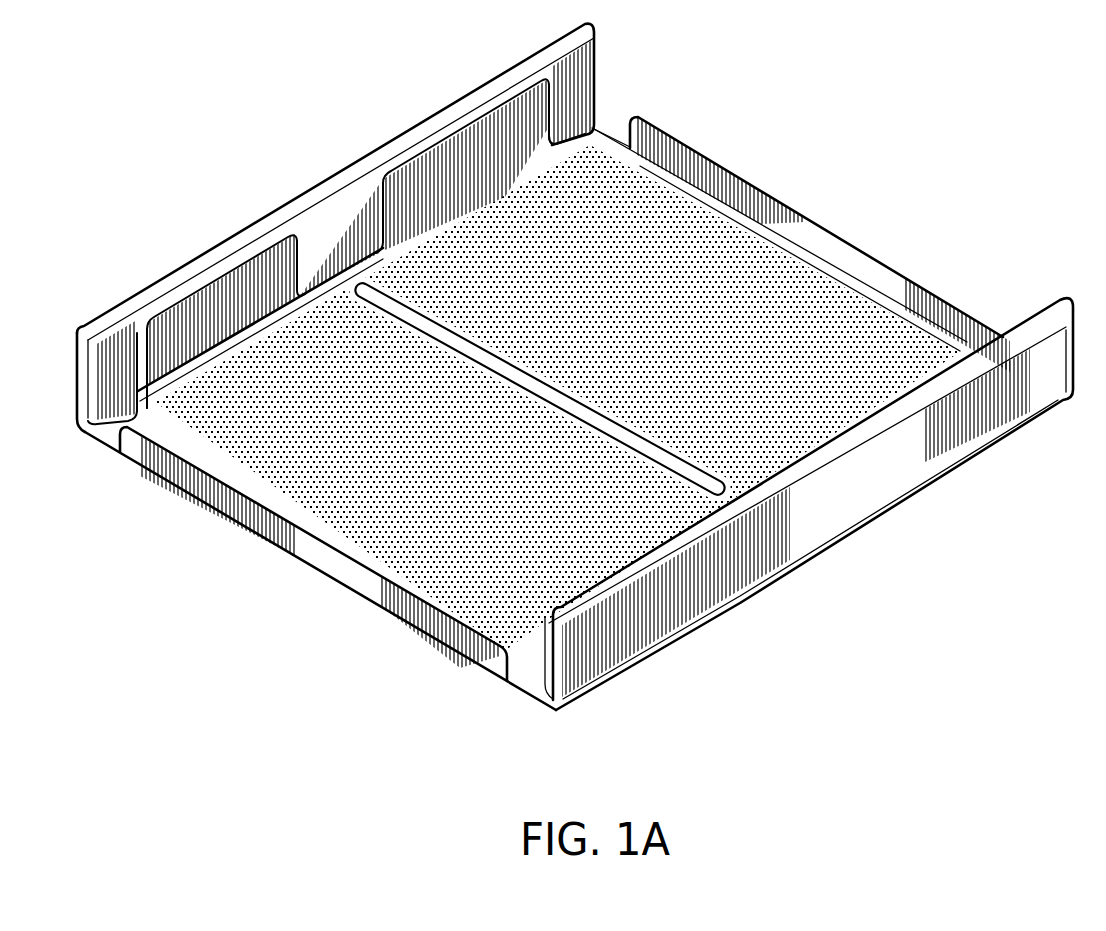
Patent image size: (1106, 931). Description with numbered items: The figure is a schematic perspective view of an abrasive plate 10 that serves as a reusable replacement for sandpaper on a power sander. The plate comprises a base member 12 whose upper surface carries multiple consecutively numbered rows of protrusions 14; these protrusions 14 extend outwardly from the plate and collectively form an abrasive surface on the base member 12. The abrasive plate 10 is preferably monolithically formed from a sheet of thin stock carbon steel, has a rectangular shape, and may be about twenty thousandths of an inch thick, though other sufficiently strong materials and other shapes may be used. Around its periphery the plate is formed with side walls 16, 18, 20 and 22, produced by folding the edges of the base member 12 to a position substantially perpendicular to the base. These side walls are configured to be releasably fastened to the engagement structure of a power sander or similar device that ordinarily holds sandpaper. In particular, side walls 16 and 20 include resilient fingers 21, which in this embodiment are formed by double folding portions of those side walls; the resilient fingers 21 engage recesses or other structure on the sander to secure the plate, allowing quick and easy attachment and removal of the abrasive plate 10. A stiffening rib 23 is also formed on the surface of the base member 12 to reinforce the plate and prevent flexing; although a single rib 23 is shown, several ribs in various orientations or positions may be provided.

The abrasive plate 10 is at (836, 122).
The base member 12 is at (822, 278).
The protrusions 14 is at (381, 549).
The side wall 16 is at (857, 508).
The side wall 18 is at (912, 292).
The side wall 20 is at (329, 181).
The resilient fingers 21 is at (586, 101).
The side wall 22 is at (177, 470).
The stiffening rib 23 is at (693, 489).